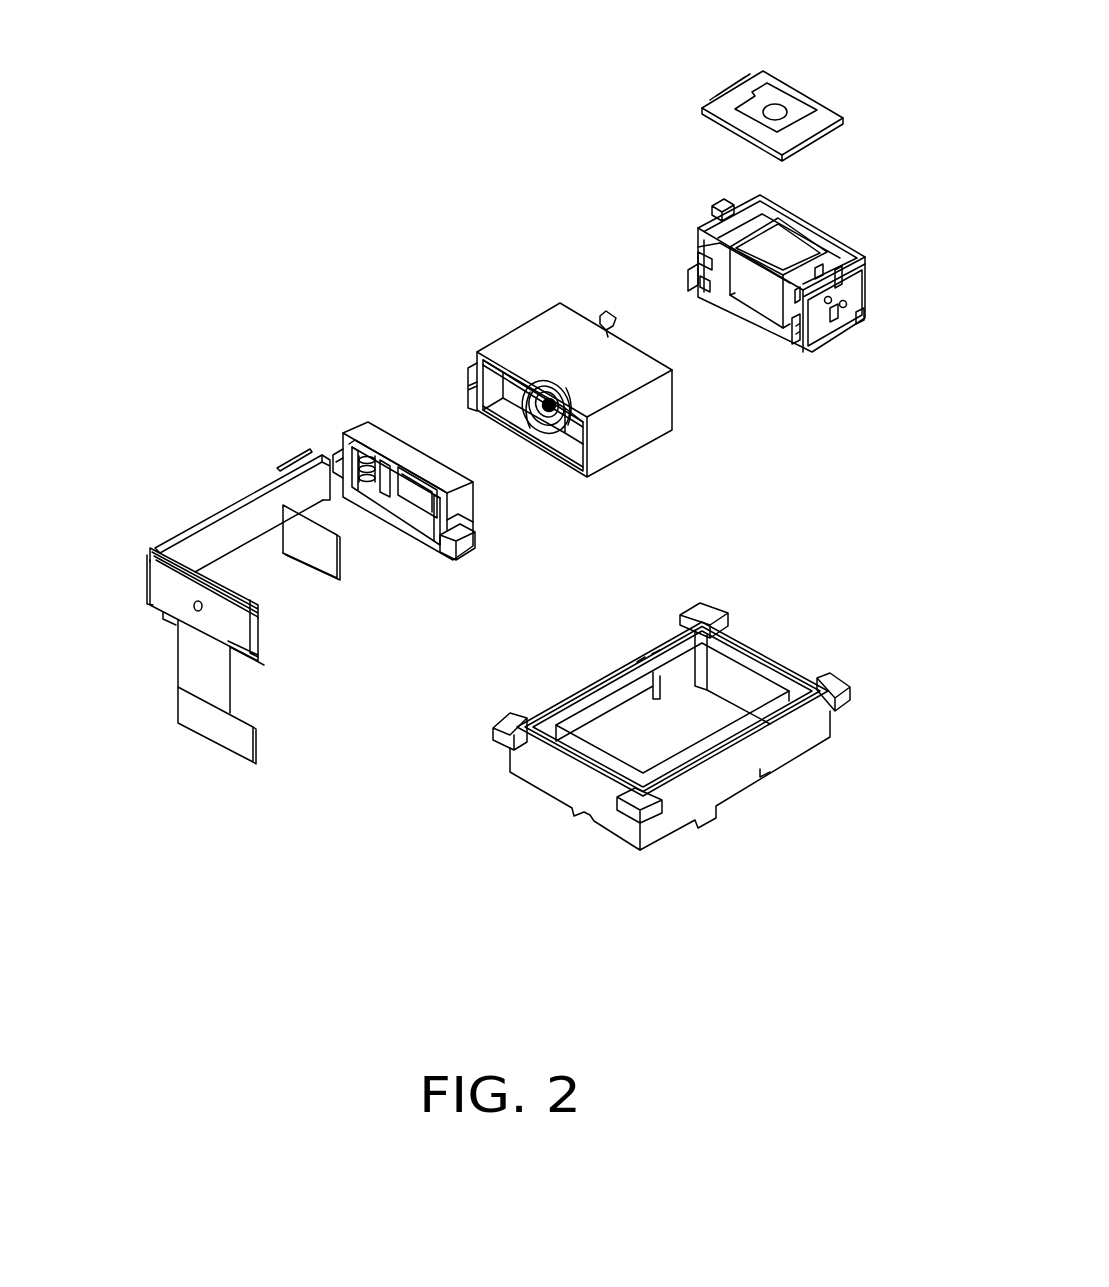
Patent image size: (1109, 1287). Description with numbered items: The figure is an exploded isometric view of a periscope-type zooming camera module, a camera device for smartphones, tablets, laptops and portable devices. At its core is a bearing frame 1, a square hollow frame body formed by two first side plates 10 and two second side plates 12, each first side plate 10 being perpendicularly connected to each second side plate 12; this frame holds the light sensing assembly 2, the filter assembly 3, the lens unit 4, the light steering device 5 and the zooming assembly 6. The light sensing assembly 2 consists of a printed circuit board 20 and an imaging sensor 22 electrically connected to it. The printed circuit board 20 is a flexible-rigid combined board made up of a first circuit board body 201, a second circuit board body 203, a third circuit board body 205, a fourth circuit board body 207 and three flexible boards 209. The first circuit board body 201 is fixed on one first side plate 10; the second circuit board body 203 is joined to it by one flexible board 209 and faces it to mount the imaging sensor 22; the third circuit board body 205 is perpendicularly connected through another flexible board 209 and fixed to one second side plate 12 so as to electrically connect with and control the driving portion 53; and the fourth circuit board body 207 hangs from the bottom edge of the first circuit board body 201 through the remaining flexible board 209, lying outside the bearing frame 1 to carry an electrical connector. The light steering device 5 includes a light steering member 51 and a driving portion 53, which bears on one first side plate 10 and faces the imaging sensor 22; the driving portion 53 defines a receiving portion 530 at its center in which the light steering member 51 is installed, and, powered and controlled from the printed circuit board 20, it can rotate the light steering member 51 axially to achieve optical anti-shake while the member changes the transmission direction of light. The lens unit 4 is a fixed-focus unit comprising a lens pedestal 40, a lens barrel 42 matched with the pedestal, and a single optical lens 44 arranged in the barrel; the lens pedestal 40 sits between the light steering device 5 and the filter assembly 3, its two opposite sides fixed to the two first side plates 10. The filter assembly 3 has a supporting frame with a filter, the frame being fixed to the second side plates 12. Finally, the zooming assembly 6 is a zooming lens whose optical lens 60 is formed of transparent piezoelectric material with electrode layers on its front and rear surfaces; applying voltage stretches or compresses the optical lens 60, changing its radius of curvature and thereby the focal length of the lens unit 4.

The bearing frame 1 is at (671, 782).
The first side plate 10 is at (590, 795).
The second side plate 12 is at (718, 790).
The light sensing assembly 2 is at (240, 620).
The printed circuit board 20 is at (240, 620).
The first circuit board body 201 is at (163, 593).
The second circuit board body 203 is at (237, 585).
The third circuit board body 205 is at (252, 508).
The fourth circuit board body 207 is at (215, 725).
The flexible board 209 is at (152, 578).
The imaging sensor 22 is at (333, 568).
The filter assembly 3 is at (362, 432).
The lens unit 4 is at (580, 377).
The lens pedestal 40 is at (590, 338).
The lens barrel 42 is at (517, 395).
The optical lens 44 is at (549, 393).
The light steering device 5 is at (813, 297).
The light steering member 51 is at (790, 243).
The driving portion 53 is at (838, 266).
The receiving portion 530 is at (786, 282).
The zooming assembly 6 is at (773, 92).
The optical lens 60 is at (777, 104).